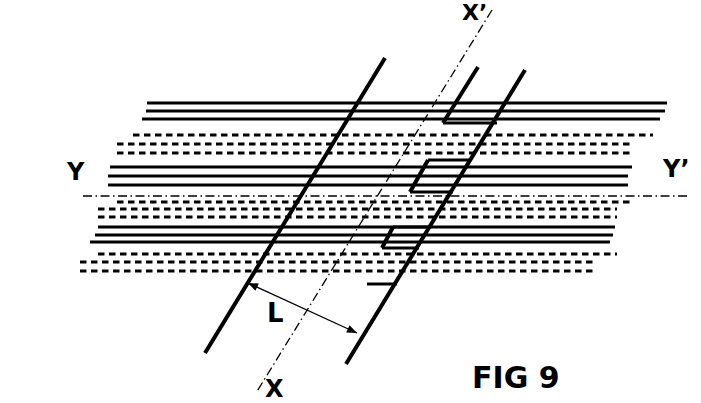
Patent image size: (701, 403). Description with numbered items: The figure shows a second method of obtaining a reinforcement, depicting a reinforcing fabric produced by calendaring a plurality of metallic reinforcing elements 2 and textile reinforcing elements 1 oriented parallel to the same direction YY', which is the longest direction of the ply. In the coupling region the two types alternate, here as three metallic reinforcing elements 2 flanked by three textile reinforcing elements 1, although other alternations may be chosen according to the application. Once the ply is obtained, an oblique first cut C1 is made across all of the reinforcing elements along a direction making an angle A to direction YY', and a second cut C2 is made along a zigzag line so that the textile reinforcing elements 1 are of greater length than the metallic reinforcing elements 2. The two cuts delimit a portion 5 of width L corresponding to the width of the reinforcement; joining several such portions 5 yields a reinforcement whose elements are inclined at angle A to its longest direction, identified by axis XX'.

The textile reinforcing elements 1 is at (173, 255).
The metallic reinforcing elements 2 is at (283, 103).
The portion 5 is at (397, 123).
The first cut C1 is at (366, 88).
The second cut C2 is at (468, 93).